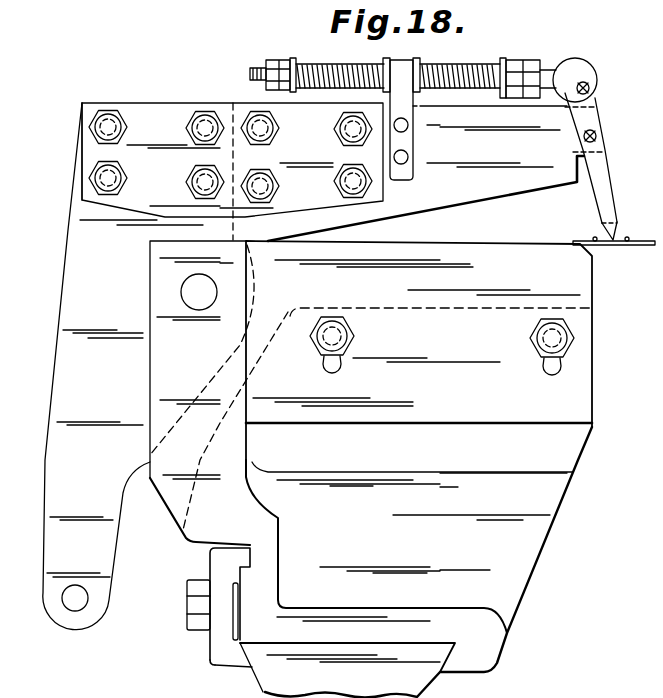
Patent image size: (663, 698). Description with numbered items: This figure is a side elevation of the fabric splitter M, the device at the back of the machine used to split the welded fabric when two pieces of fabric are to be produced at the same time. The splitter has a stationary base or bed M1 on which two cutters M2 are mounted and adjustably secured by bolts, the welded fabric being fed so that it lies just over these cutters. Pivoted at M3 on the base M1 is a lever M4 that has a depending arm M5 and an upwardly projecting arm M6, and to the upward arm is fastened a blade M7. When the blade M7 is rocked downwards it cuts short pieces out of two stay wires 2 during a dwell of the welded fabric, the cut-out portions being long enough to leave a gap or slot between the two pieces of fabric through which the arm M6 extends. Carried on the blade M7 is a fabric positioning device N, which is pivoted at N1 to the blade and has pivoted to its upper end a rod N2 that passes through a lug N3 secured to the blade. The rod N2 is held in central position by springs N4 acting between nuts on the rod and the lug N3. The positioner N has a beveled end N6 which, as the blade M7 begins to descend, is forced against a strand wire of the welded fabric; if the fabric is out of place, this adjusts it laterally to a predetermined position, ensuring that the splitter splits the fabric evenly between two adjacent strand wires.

The splitter M is at (173, 113).
The stationary base or bed M1 is at (523, 537).
The cutter M2 is at (580, 283).
The pivot M3 is at (182, 294).
The lever M4 is at (75, 270).
The depending arm M5 is at (80, 534).
The upwardly projecting arm M6 is at (75, 153).
The blade M7 is at (510, 168).
The fabric positioning device N is at (605, 187).
The pivot N1 is at (596, 108).
The rod N2 is at (547, 70).
The lug N3 is at (405, 63).
The spring N4 is at (321, 64).
The beveled end N6 is at (615, 230).
The stay wire 2 is at (630, 246).